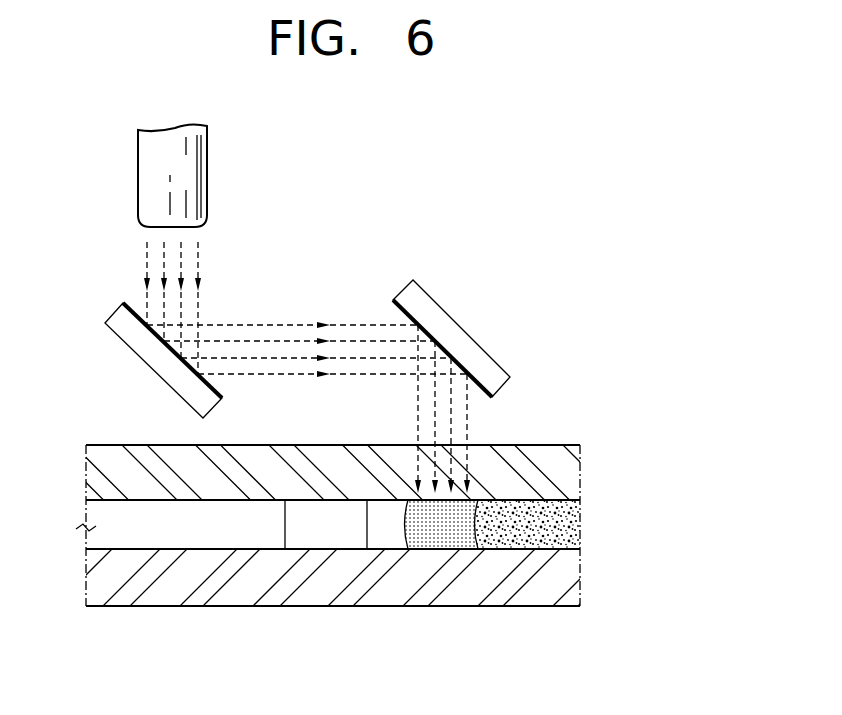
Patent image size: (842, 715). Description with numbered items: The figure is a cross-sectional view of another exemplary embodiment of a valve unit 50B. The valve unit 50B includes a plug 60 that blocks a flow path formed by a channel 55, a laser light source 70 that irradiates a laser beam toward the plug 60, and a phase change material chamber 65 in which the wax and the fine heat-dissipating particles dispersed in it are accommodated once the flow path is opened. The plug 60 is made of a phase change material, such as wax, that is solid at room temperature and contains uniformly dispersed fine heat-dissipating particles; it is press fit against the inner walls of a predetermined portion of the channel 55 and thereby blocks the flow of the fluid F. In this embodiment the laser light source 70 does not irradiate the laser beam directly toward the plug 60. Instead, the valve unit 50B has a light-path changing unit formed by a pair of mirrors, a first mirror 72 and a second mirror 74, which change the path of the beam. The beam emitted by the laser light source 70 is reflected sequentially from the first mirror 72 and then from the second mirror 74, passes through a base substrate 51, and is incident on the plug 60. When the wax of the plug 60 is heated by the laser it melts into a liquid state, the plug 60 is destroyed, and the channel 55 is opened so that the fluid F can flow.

The laser light source 70 is at (143, 167).
The first mirror 72 is at (125, 328).
The second mirror 74 is at (455, 330).
The valve unit 50B is at (600, 288).
The base substrate 51 is at (518, 612).
The channel 55 is at (135, 537).
The phase change material chamber 65 is at (328, 535).
The plug 60 is at (443, 537).
The fluid F is at (574, 522).